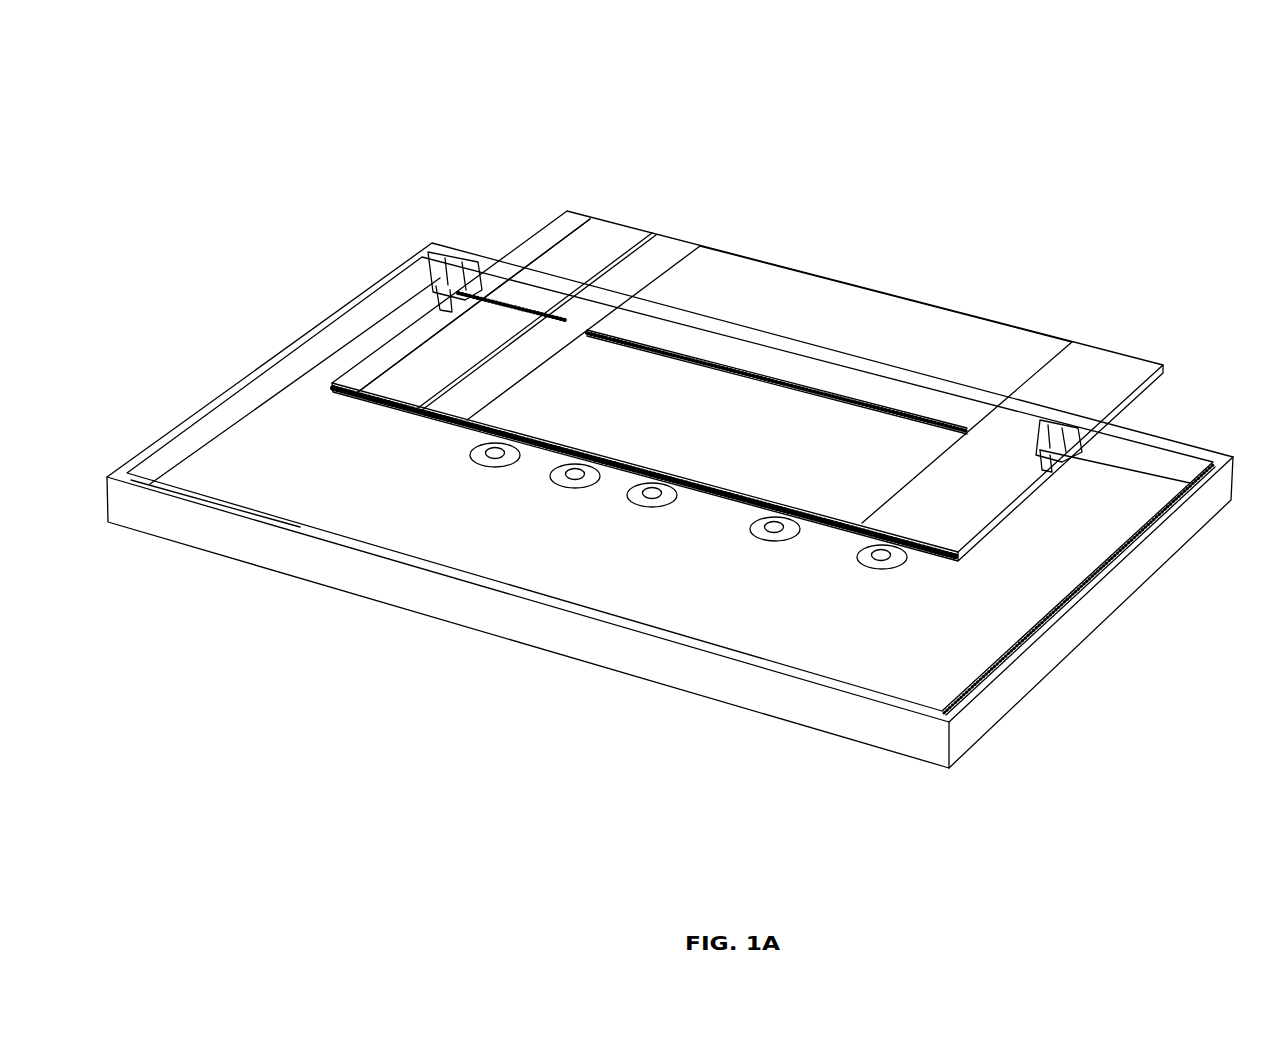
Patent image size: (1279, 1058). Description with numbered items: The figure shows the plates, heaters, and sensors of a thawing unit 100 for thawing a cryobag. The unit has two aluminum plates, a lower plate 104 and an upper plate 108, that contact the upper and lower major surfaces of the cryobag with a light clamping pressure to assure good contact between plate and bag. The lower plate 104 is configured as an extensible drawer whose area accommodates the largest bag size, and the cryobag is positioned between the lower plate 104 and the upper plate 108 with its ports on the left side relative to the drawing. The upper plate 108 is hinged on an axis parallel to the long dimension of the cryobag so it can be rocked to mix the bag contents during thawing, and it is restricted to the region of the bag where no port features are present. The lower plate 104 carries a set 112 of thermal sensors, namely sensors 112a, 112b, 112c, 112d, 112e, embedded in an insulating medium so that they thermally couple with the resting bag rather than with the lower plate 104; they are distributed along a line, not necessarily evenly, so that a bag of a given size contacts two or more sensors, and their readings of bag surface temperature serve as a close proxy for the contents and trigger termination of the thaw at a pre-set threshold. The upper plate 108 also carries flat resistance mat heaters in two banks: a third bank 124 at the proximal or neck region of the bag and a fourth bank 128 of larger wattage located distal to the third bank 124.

The thawing unit 100 is at (160, 124).
The lower plate 104 is at (1058, 632).
The upper plate 108 is at (1140, 377).
The set of thermal sensors 112 is at (937, 602).
The thermal sensor 112a is at (497, 458).
The thermal sensor 112b is at (578, 479).
The thermal sensor 112c is at (655, 498).
The thermal sensor 112d is at (778, 532).
The thermal sensor 112e is at (885, 560).
The third bank of heaters 124 is at (676, 222).
The fourth bank of heaters 128 is at (1088, 330).